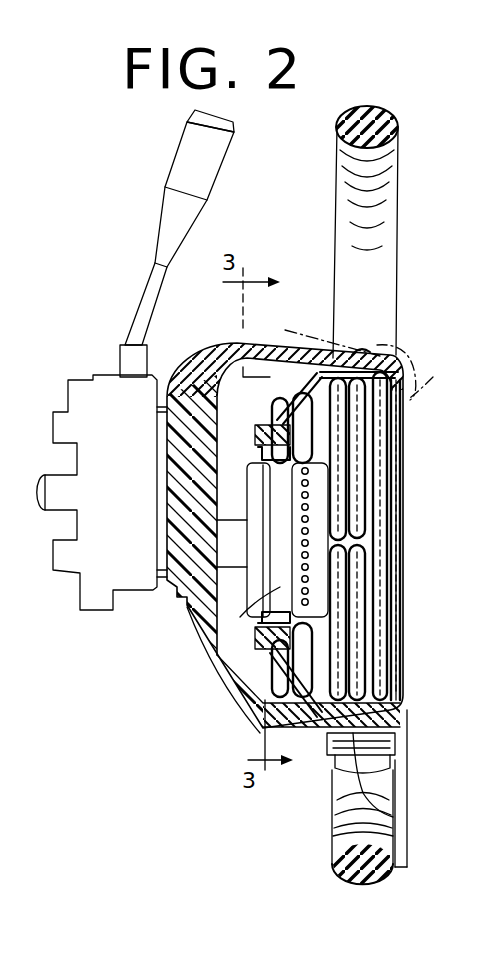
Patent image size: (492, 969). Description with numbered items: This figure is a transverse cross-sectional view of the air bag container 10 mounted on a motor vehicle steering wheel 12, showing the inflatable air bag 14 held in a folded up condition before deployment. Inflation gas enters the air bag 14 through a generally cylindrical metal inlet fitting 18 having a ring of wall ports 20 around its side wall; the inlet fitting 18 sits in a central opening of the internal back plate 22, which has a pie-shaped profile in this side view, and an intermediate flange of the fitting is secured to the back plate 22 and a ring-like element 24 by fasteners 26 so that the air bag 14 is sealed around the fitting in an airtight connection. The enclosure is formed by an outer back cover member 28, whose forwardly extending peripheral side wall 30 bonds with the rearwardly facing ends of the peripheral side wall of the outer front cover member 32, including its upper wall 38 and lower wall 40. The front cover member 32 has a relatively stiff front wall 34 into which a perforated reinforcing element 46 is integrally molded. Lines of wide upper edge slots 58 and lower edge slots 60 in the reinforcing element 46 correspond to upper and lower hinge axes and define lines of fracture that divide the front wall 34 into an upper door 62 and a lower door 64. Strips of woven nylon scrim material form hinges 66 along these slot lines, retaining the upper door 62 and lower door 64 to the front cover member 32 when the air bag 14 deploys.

The air bag enclosure or container 10 is at (325, 573).
The steering wheel 12 is at (402, 232).
The inflatable air bag 14 is at (398, 538).
The inlet fitting 18 is at (280, 587).
The wall ports 20 is at (292, 533).
The back plate 22 is at (275, 412).
The ring-like element 24 is at (275, 427).
The fasteners 26 is at (273, 463).
The outer back cover member 28 is at (188, 540).
The peripheral edge flange or side wall 30 is at (325, 573).
The outer front cover member 32 is at (233, 340).
The front wall 34 is at (402, 418).
The upper wall 38 is at (283, 340).
The lower wall 40 is at (390, 815).
The reinforcing element 46 is at (356, 350).
The upper edge slots 58 is at (433, 377).
The lower edge slots 60 is at (403, 705).
The upper panel or door 62 is at (396, 332).
The lower panel or door 64 is at (390, 790).
The hinges 66 is at (398, 538).